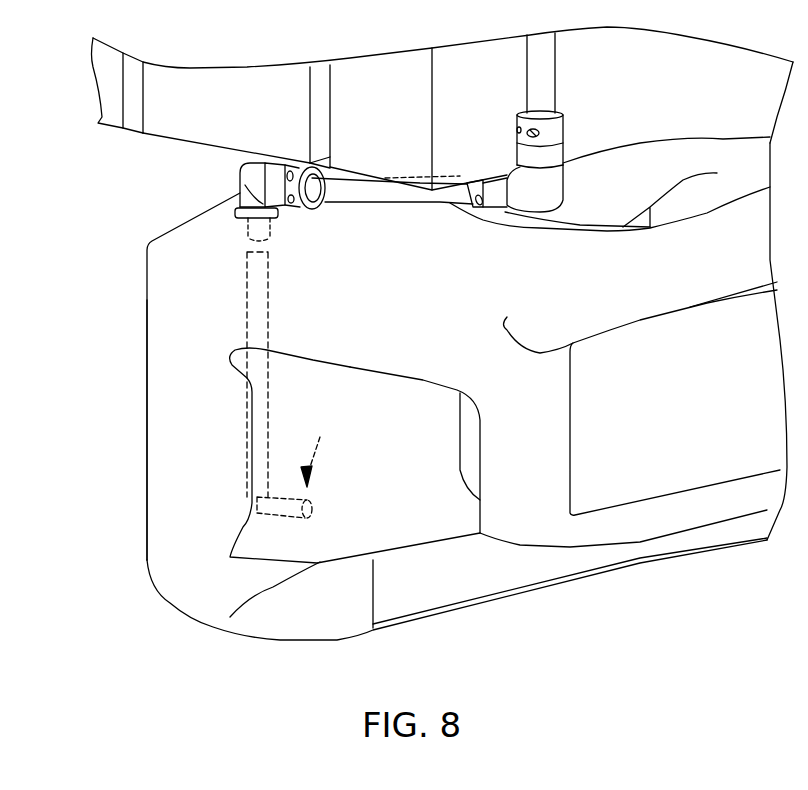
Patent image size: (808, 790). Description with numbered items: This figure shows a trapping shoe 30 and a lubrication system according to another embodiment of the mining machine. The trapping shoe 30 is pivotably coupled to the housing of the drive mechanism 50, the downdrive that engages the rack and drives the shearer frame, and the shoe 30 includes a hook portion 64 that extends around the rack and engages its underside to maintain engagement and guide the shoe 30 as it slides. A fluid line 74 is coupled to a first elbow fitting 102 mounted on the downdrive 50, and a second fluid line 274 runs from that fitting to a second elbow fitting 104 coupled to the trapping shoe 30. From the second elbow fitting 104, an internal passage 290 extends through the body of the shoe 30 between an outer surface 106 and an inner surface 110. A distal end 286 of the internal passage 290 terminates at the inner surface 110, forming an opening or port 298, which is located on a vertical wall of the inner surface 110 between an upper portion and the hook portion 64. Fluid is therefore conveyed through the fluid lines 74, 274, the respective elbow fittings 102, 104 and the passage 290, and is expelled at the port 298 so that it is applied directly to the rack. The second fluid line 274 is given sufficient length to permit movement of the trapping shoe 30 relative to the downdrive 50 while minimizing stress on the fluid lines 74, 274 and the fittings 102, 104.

The trapping shoe 30 is at (152, 298).
The drive mechanism 50 is at (473, 62).
The hook portion 64 is at (278, 620).
The fluid line 74 is at (557, 77).
The first elbow fitting 102 is at (565, 128).
The second elbow fitting 104 is at (253, 172).
The outer surface 106 is at (147, 393).
The inner surface 110 is at (247, 548).
The second fluid line 274 is at (403, 205).
The distal end 286 is at (317, 451).
The internal passage 290 is at (268, 293).
The port 298 is at (320, 510).